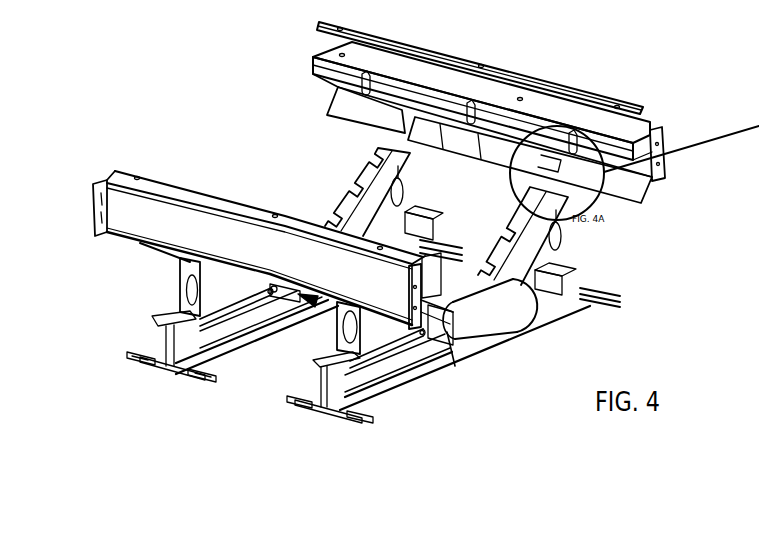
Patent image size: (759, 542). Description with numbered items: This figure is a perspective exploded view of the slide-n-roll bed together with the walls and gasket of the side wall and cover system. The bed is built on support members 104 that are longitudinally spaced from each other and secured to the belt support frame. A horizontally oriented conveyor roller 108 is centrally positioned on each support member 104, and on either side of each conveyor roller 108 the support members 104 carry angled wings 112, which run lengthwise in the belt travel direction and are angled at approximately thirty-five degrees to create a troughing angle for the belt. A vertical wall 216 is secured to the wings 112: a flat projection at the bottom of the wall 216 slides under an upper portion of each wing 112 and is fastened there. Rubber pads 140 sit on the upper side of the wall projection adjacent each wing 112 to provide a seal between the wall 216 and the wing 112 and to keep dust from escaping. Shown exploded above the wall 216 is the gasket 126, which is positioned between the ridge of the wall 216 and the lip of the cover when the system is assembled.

The support member 104 is at (156, 343).
The conveyor roller 108 is at (493, 316).
The angled wing 112 is at (180, 293).
The gasket 126 is at (480, 68).
The rubber pad 140 is at (683, 213).
The wall 216 is at (98, 173).